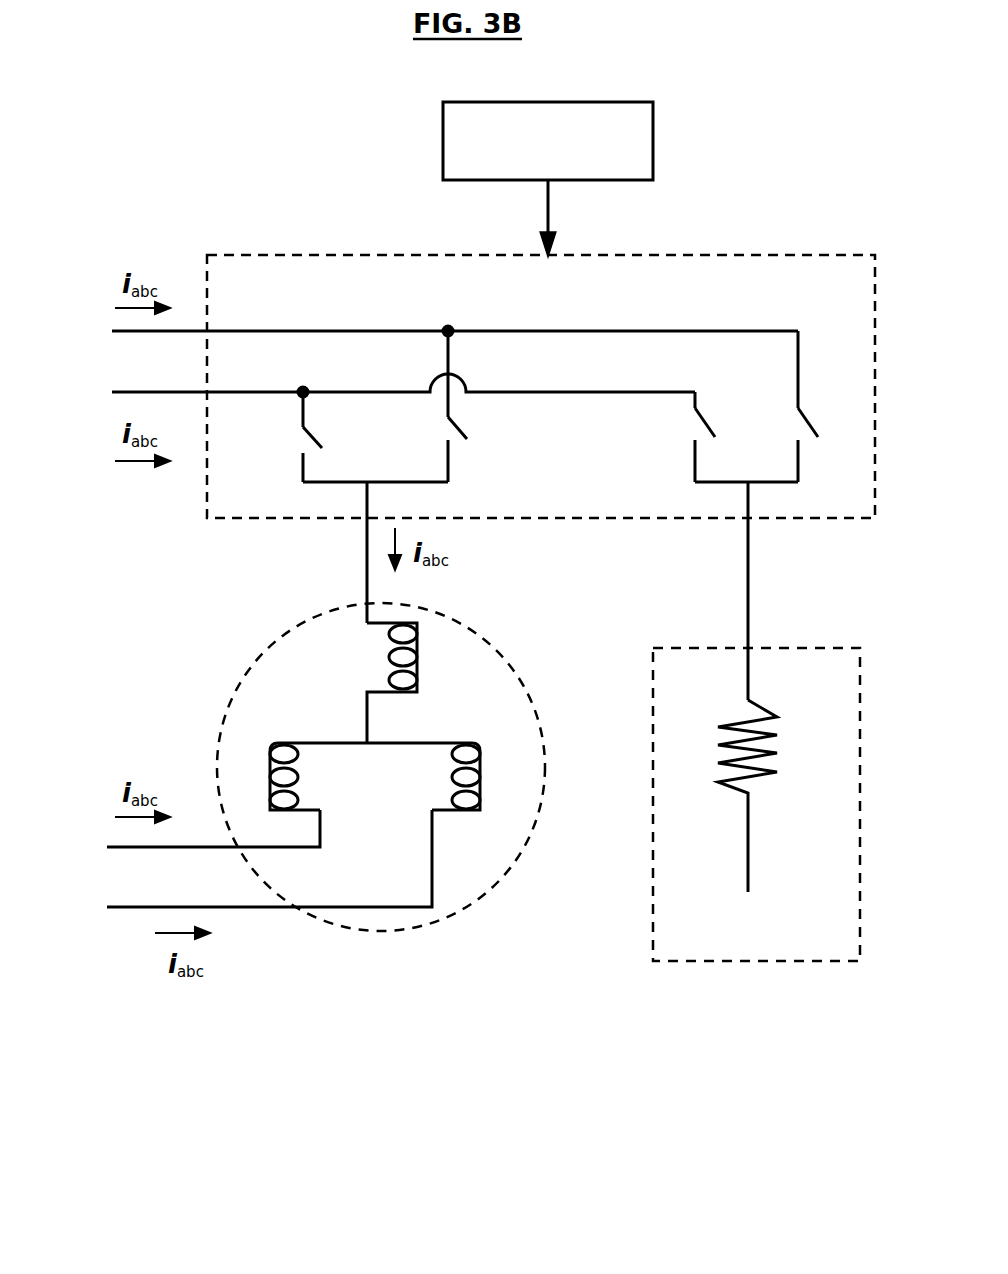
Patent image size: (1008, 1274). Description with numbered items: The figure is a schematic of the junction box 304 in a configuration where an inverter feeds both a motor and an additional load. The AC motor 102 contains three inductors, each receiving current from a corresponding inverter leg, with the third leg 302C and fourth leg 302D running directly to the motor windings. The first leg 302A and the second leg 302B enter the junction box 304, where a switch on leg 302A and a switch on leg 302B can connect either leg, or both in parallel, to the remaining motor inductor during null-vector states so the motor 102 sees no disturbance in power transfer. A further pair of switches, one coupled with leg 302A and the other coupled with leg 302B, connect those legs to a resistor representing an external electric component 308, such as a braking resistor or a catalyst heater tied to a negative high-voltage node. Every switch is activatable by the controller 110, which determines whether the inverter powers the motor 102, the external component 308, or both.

The controller 110 is at (548, 179).
The junction box 304 is at (541, 477).
The first leg 302A is at (427, 331).
The second leg 302B is at (376, 389).
The third leg 302C is at (184, 835).
The fourth leg 302D is at (240, 866).
The AC motor 102 is at (525, 688).
The external electric component 308 is at (757, 961).